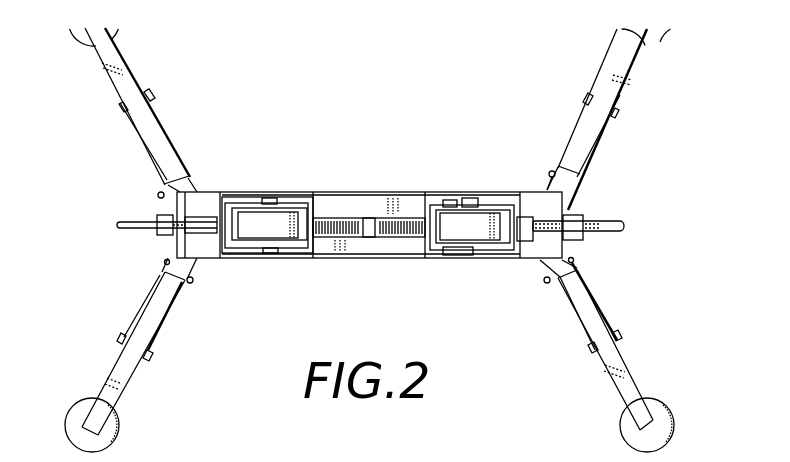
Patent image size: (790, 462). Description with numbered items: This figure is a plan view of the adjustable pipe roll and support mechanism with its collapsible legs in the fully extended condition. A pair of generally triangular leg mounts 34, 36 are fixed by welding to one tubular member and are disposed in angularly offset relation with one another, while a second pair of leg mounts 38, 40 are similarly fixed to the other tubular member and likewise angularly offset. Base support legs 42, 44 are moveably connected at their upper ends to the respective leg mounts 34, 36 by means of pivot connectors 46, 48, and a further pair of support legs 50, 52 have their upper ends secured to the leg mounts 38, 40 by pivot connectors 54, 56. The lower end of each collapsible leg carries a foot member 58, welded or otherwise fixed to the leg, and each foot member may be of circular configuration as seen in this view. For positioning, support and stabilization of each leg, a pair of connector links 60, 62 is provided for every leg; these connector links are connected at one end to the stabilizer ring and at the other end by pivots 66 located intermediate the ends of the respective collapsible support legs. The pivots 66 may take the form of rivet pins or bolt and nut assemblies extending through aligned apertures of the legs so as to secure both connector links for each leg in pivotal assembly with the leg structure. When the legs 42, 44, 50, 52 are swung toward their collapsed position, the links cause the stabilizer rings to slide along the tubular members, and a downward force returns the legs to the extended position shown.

The leg mount 34 is at (158, 195).
The leg mount 36 is at (163, 255).
The leg mount 38 is at (580, 195).
The leg mount 40 is at (576, 260).
The base support leg 42 is at (108, 80).
The base support leg 44 is at (110, 370).
The pivot connector 46 is at (196, 185).
The pivot connector 48 is at (194, 281).
The support leg 50 is at (632, 78).
The support leg 52 is at (623, 357).
The pivot connector 54 is at (549, 171).
The pivot connector 56 is at (545, 283).
The foot member 58 is at (112, 433).
The connector link 60 is at (140, 305).
The connector link 62 is at (172, 317).
The pivot 66 is at (151, 360).